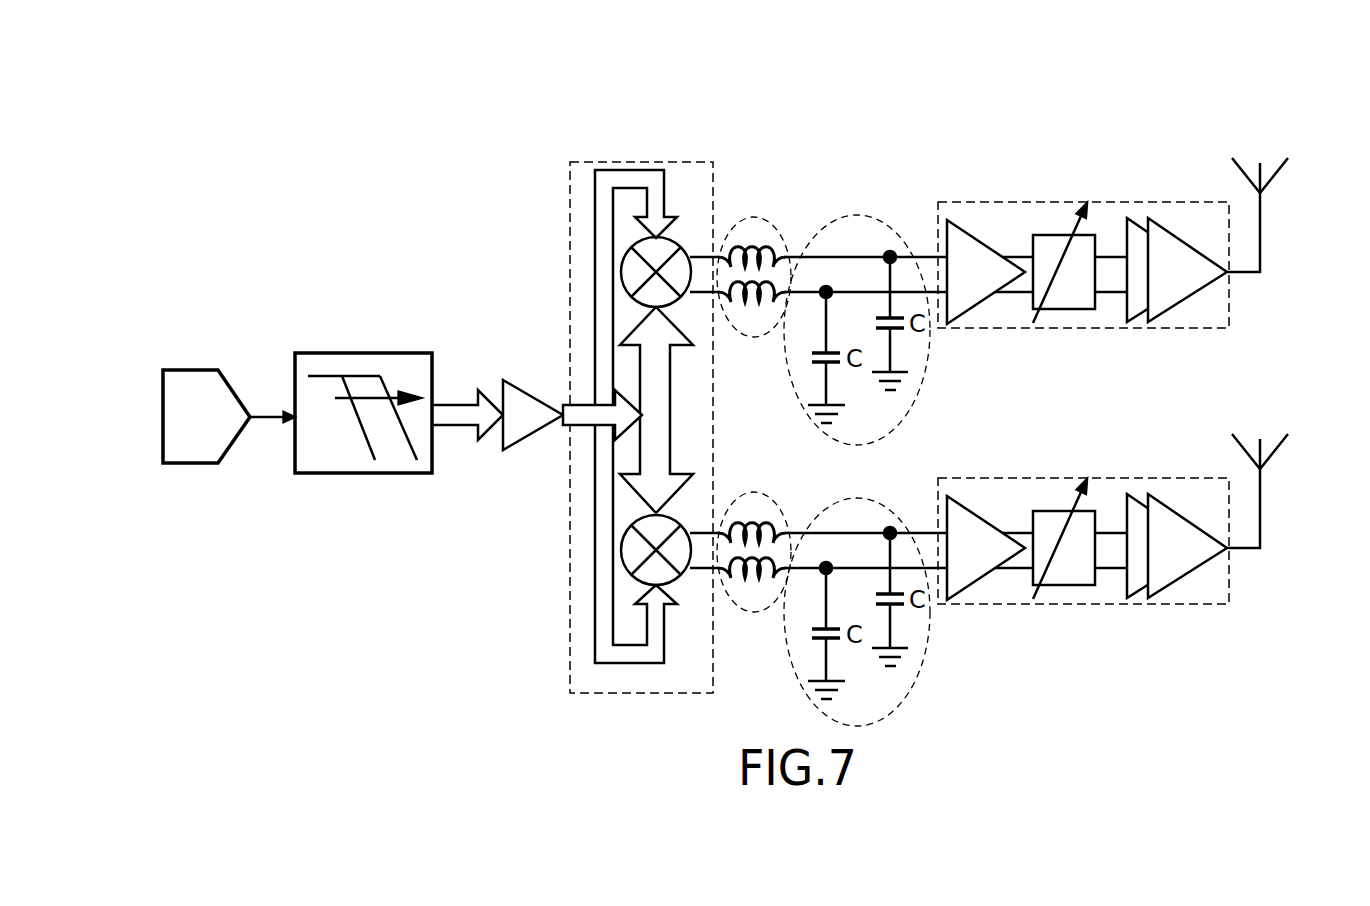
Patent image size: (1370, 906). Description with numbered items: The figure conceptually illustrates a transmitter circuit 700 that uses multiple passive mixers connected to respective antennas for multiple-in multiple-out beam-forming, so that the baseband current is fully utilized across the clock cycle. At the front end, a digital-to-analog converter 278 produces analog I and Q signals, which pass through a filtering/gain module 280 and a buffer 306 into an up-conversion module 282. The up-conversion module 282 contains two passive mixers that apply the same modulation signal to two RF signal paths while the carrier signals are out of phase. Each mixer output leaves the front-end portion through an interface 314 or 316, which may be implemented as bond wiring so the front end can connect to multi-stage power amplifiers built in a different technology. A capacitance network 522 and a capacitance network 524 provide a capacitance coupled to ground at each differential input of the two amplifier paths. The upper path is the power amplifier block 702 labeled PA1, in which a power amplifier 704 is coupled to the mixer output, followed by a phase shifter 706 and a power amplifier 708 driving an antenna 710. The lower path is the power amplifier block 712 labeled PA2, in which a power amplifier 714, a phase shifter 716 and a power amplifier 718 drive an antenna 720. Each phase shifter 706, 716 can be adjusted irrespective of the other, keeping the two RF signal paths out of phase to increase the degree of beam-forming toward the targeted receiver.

The transmitter circuit 700 is at (1100, 69).
The digital-to-analog converter 278 is at (231, 388).
The filtering/gain module 280 is at (425, 353).
The buffer 306 is at (503, 440).
The up-conversion module 282 is at (713, 178).
The interface 314 is at (774, 221).
The interface 316 is at (779, 504).
The capacitance network 522 is at (873, 217).
The capacitance network 524 is at (886, 502).
The power amplifier block PA1 702 is at (1083, 262).
The power amplifier 704 is at (983, 302).
The phase shifter 706 is at (1092, 310).
The power amplifier 708 is at (1175, 302).
The antenna 710 is at (1260, 222).
The power amplifier block PA2 712 is at (1083, 533).
The power amplifier 714 is at (983, 578).
The phase shifter 716 is at (1092, 586).
The power amplifier 718 is at (1175, 578).
The antenna 720 is at (1260, 505).